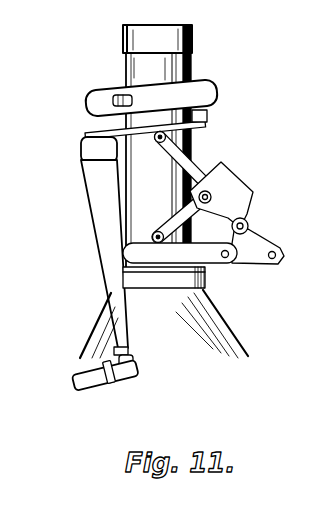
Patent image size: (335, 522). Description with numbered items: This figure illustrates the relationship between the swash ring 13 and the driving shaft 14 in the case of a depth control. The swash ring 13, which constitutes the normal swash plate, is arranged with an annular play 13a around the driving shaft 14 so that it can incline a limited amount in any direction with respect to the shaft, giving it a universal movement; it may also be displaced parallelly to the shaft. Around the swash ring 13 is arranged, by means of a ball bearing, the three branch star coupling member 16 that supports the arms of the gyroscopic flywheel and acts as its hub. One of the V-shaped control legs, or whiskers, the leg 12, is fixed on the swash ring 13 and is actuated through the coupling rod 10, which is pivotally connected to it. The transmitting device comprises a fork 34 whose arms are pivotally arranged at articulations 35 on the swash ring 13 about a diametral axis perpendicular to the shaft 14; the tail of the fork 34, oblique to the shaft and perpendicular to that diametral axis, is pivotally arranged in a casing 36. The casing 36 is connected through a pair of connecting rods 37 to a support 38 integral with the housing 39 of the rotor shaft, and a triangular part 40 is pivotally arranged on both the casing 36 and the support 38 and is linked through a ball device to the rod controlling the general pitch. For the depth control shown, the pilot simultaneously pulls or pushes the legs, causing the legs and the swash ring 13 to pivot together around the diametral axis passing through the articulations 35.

The coupling rod 10 is at (75, 380).
The control V-shaped leg 12 is at (104, 227).
The swash ring 13 is at (203, 122).
The annular play 13a is at (123, 83).
The driving shaft 14 is at (138, 188).
The three branch star coupling member 16 is at (175, 92).
The fork 34 is at (177, 152).
The articulation 35 is at (158, 143).
The casing 36 is at (233, 195).
The connecting rod 37 is at (157, 231).
The support 38 is at (138, 257).
The housing 39 is at (212, 318).
The triangular part 40 is at (252, 233).